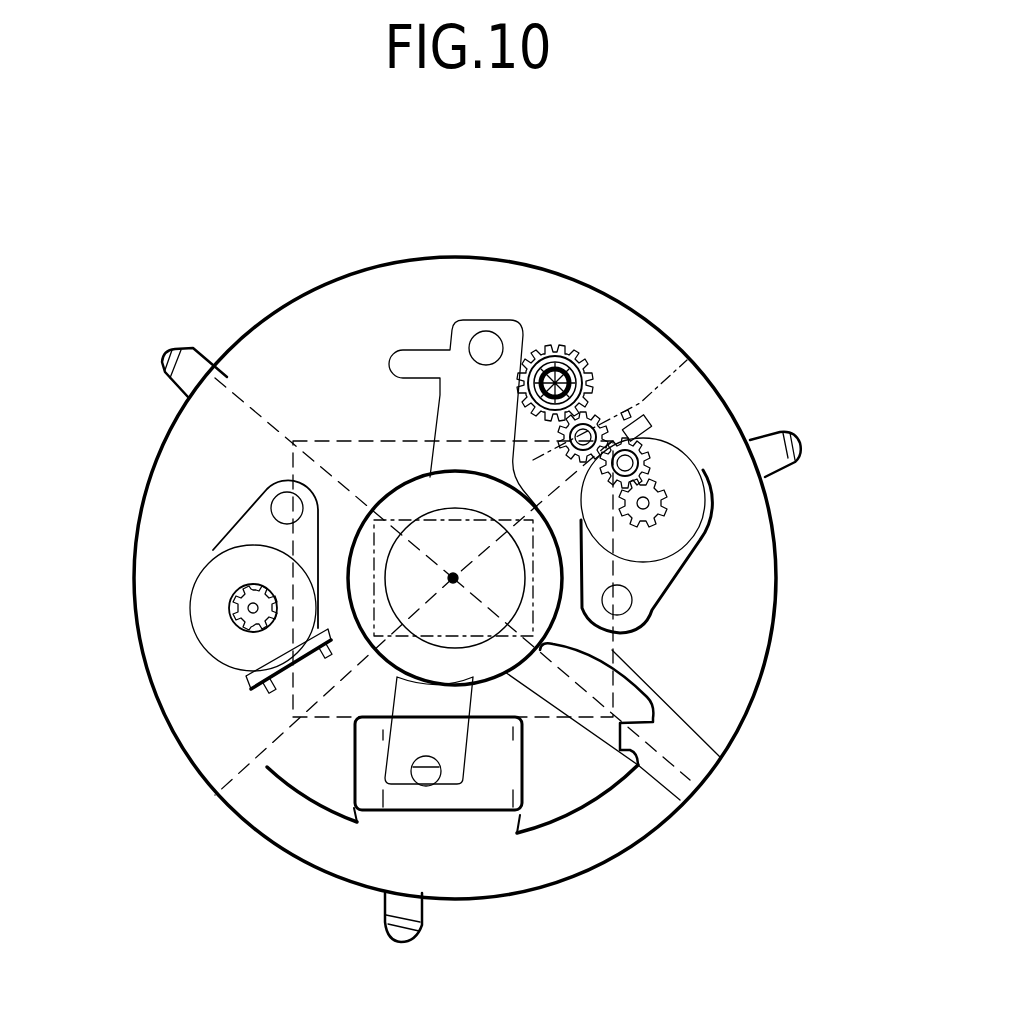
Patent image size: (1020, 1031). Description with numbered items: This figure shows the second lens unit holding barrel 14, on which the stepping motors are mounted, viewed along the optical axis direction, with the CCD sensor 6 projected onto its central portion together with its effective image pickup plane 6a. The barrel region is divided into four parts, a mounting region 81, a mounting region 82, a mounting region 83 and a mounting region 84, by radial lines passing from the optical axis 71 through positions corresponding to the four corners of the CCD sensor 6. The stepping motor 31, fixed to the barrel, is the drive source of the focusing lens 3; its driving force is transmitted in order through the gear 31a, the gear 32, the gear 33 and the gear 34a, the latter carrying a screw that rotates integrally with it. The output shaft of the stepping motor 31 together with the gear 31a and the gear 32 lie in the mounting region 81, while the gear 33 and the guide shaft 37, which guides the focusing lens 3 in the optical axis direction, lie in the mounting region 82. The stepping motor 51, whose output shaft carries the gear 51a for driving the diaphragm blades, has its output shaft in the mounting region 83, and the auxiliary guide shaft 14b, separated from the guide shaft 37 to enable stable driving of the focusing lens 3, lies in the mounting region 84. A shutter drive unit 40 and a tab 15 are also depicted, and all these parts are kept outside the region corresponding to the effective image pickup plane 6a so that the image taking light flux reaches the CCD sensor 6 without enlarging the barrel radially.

The focusing lens 3 is at (483, 590).
The CCD sensor 6 is at (718, 755).
The effective image pickup plane 6a is at (668, 788).
The second lens unit holding barrel 14 is at (778, 604).
The auxiliary guide shaft 14b is at (423, 785).
The mounting tab 15 is at (513, 337).
The stepping motor 31 is at (685, 522).
The gear 31a is at (672, 496).
The gear 32 is at (650, 447).
The gear 33 is at (590, 410).
The gear 34a is at (587, 350).
The guide shaft 37 is at (480, 336).
The shutter drive unit 40 is at (587, 810).
The stepping motor 51 is at (213, 648).
The gear 51a is at (230, 607).
The optical axis 71 is at (453, 577).
The mounting region 81 is at (747, 673).
The mounting region 82 is at (355, 295).
The mounting region 83 is at (183, 463).
The mounting region 84 is at (460, 848).